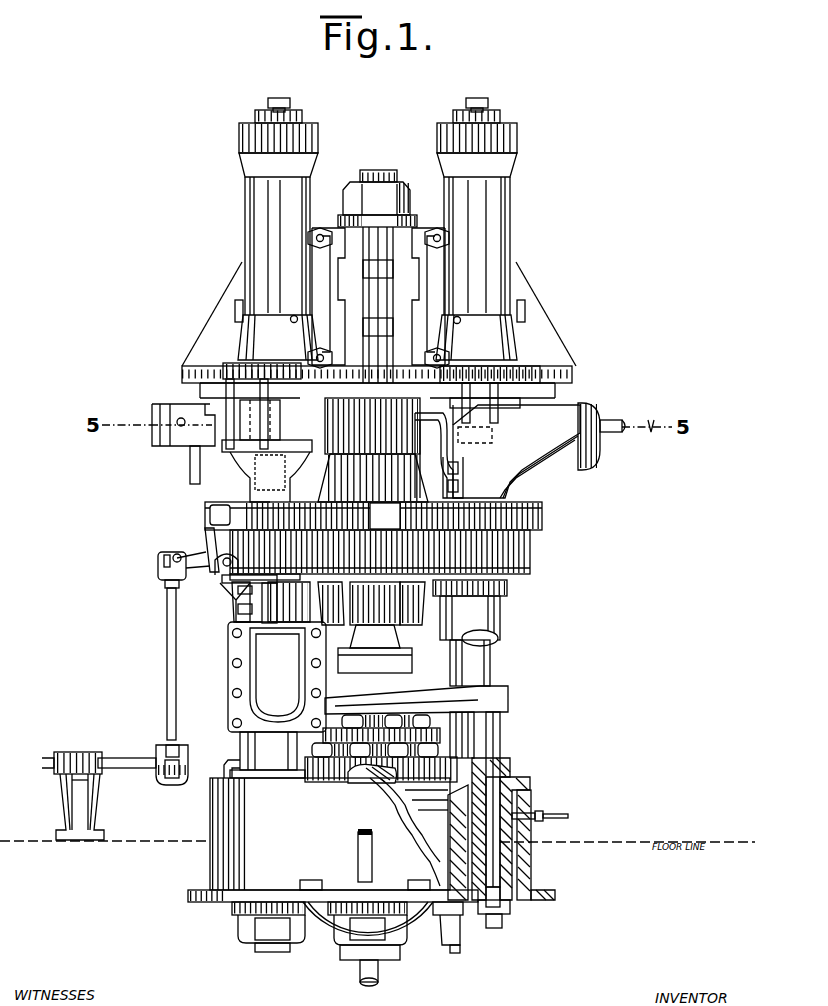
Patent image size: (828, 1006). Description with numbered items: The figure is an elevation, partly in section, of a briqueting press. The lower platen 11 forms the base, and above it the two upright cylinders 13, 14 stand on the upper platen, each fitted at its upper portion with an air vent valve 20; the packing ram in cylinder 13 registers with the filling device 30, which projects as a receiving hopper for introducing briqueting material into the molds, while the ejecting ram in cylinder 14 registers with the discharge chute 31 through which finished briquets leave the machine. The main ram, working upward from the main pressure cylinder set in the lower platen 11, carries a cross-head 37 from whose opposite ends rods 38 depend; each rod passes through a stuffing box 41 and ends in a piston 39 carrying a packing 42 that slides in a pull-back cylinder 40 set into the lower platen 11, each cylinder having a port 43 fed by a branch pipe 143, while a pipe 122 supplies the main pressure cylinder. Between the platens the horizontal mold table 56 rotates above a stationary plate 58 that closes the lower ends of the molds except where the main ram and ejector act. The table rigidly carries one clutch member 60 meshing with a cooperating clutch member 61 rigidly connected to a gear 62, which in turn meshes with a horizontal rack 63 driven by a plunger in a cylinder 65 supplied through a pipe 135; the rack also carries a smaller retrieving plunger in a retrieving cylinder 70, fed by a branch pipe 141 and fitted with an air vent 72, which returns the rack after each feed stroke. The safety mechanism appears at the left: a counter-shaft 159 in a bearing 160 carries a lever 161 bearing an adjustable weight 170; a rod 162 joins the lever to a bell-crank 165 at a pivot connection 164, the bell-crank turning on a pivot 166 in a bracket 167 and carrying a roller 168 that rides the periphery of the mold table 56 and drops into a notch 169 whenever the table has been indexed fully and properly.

The lower platen 11 is at (333, 869).
The upright cylinder 13 is at (510, 224).
The upright cylinder 14 is at (248, 215).
The air vent valve 20 is at (292, 316).
The filling device 30 is at (562, 410).
The discharge chute 31 is at (250, 680).
The cross-head 37 is at (505, 696).
The rod 38 is at (499, 734).
The piston 39 is at (500, 888).
The pull-back cylinder 40 is at (532, 842).
The stuffing box 41 is at (512, 772).
The packing 42 is at (508, 912).
The port 43 is at (522, 802).
The mold table 56 is at (538, 505).
The stationary plate 58 is at (528, 580).
The clutch member 60 is at (372, 470).
The clutch member 61 is at (465, 458).
The gear 62 is at (338, 420).
The rack 63 is at (300, 438).
The cylinder 65 is at (582, 442).
The retrieving cylinder 70 is at (176, 386).
The air vent 72 is at (178, 428).
The pipe 122 is at (380, 973).
The pipe 135 is at (618, 422).
The branch pipe 141 is at (192, 466).
The branch pipe 143 is at (560, 816).
The counter-shaft 159 is at (130, 768).
The bearing 160 is at (92, 818).
The lever 161 is at (170, 770).
The rod 162 is at (167, 684).
The pivot connection 164 is at (160, 568).
The bell-crank 165 is at (206, 550).
The pivot 166 is at (224, 568).
The bracket 167 is at (232, 600).
The roller 168 is at (212, 514).
The notch 169 is at (378, 516).
The weight 170 is at (172, 782).